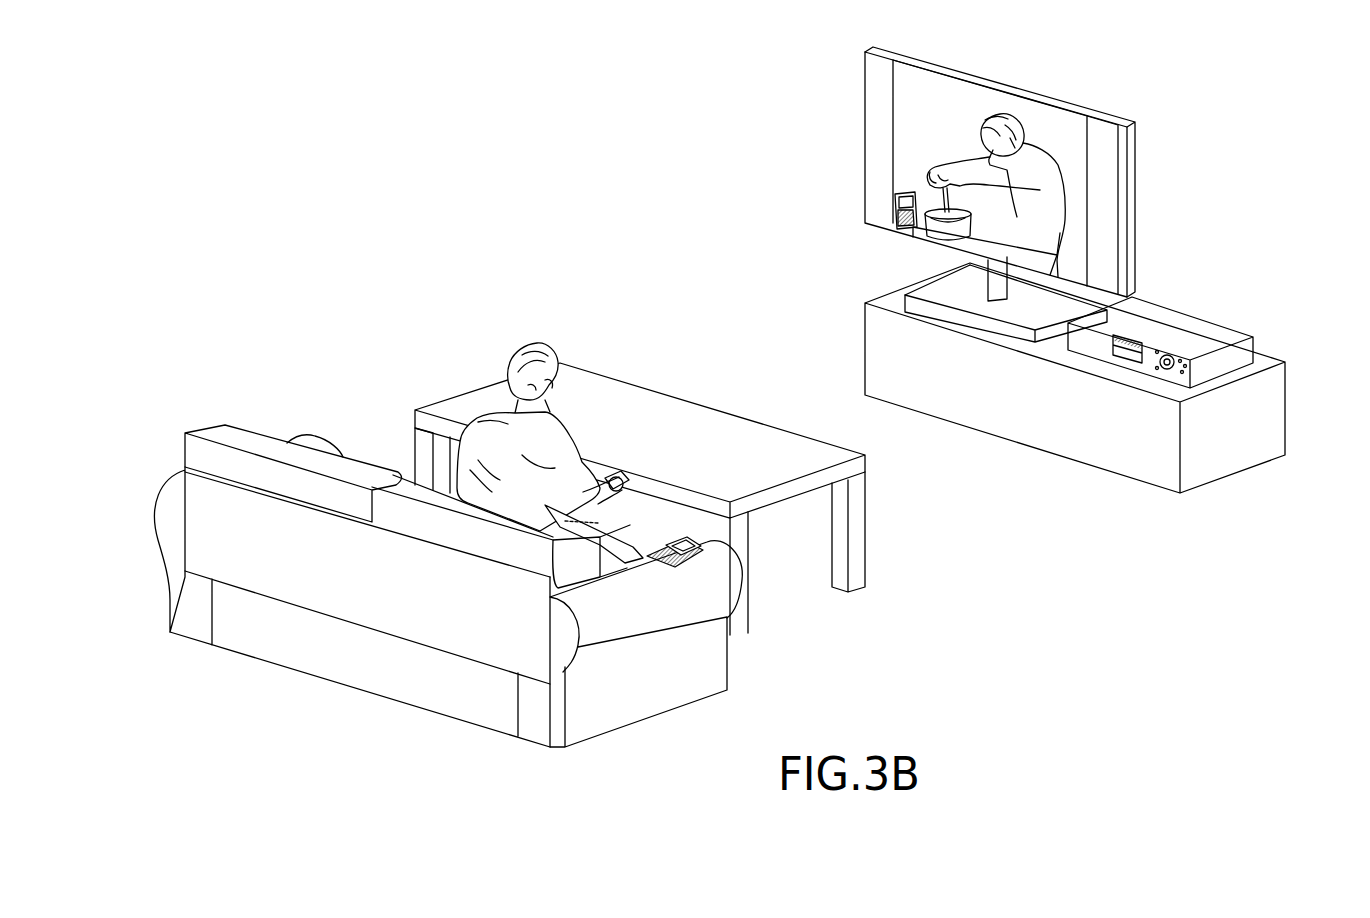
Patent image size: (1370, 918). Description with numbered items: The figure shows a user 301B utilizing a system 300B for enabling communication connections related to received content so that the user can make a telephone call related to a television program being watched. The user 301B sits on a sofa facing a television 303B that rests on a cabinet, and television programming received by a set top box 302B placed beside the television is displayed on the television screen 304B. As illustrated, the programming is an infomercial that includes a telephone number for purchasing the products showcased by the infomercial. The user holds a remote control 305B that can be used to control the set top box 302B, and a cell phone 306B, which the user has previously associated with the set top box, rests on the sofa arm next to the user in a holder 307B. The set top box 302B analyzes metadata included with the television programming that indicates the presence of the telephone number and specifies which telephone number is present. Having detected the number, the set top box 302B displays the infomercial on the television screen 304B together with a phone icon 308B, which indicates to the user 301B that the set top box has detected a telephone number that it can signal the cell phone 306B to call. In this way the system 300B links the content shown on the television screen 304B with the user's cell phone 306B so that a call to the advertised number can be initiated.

The system 300B is at (610, 99).
The user 301B is at (517, 350).
The set top box 302B is at (1213, 331).
The television 303B is at (1123, 188).
The television screen 304B is at (990, 174).
The remote control 305B is at (626, 491).
The cell phone 306B is at (684, 563).
The mobile device dock 307B is at (678, 540).
The phone icon 308B is at (895, 196).